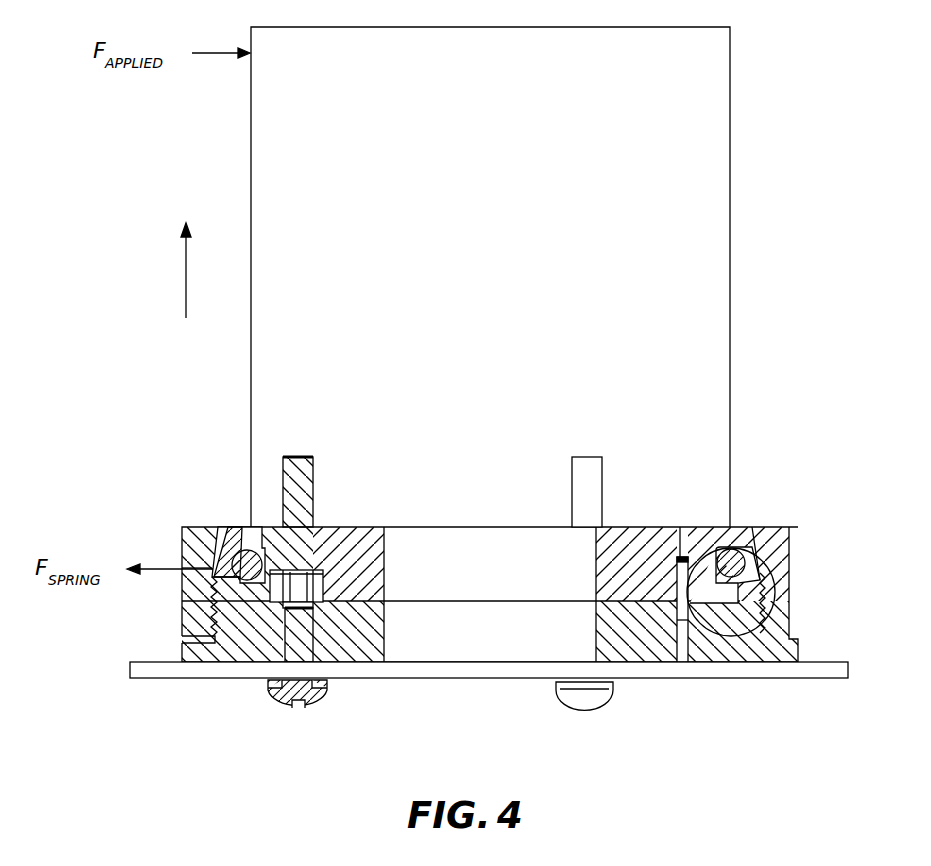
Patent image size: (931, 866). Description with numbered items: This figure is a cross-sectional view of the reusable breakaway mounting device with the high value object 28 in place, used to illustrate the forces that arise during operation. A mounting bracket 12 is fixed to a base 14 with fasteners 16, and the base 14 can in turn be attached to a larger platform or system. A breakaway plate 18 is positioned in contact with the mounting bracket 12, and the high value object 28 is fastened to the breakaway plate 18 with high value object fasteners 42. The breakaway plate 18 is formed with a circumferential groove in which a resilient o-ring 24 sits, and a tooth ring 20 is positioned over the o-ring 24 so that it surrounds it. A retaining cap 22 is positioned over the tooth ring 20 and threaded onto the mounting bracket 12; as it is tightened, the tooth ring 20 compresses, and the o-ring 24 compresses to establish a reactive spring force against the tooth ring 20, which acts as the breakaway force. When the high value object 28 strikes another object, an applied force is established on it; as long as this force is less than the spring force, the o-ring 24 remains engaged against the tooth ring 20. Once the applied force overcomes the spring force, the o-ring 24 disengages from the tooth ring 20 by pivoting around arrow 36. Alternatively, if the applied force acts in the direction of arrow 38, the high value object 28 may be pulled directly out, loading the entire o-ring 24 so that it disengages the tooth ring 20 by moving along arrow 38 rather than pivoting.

The mounting bracket 12 is at (643, 650).
The base 14 is at (828, 670).
The fasteners 16 is at (597, 492).
The breakaway plate 18 is at (652, 540).
The tooth ring 20 is at (217, 527).
The retaining cap 22 is at (782, 538).
The o-ring 24 is at (734, 562).
The high value object 28 is at (506, 234).
The arrow 36 is at (733, 647).
The arrow 38 is at (186, 278).
The high value object fasteners 42 is at (313, 492).